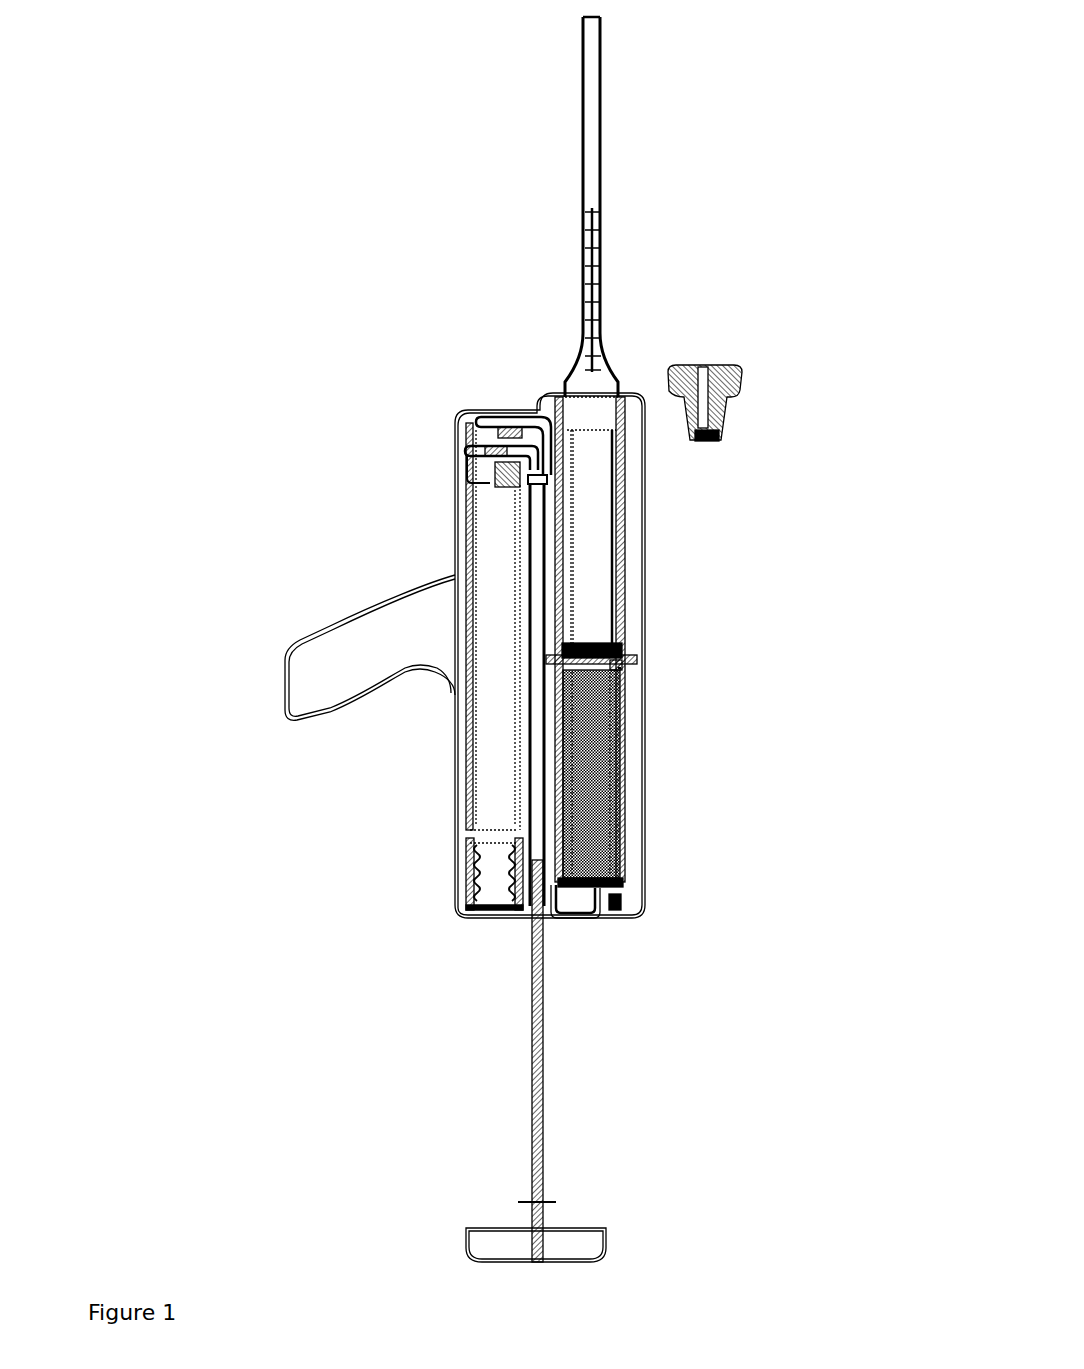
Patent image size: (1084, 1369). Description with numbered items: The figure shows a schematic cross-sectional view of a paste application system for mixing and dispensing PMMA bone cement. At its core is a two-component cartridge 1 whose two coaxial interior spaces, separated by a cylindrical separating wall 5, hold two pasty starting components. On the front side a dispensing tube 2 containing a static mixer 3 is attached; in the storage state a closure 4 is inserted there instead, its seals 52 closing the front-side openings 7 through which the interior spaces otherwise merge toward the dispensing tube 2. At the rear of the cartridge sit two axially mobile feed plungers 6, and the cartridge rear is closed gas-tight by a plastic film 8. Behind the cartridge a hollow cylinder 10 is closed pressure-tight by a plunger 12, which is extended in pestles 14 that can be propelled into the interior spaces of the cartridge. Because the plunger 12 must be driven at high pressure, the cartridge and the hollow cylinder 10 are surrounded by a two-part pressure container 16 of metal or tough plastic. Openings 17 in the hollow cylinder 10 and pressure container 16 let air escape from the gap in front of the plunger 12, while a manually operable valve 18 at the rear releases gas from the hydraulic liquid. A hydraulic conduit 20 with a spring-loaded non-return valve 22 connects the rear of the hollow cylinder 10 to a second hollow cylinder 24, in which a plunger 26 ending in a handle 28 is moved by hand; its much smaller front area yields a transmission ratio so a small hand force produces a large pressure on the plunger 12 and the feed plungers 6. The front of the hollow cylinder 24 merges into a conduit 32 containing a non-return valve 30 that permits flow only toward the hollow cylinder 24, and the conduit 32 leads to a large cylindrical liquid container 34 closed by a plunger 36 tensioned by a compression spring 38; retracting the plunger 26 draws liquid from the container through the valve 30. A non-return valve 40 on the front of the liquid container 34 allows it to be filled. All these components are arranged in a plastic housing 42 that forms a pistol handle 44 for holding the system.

The two-component cartridge 1 is at (592, 492).
The dispensing tube 2 is at (593, 90).
The static mixer 3 is at (600, 262).
The closure 4 is at (722, 400).
The separating wall 5 is at (612, 540).
The feed plungers 6 is at (592, 646).
The openings 7 is at (612, 430).
The film 8 is at (620, 668).
The hollow cylinder 10 is at (563, 712).
The plunger 12 is at (602, 873).
The pestles 14 is at (616, 783).
The pressure container 16 is at (625, 467).
The openings 17 is at (622, 666).
The manually operable valve 18 is at (613, 895).
The hydraulic conduit 20 is at (518, 420).
The non-return valve 22 is at (498, 432).
The hollow cylinder 24 is at (528, 773).
The plunger 26 is at (542, 1048).
The handle 28 is at (568, 1250).
The non-return valve 30 is at (488, 448).
The conduit 32 is at (468, 455).
The liquid container 34 is at (497, 617).
The plunger 36 is at (495, 843).
The compression spring 38 is at (507, 880).
The non-return valve 40 is at (508, 478).
The housing 42 is at (638, 648).
The pistol handle 44 is at (350, 660).
The seals 52 is at (720, 425).